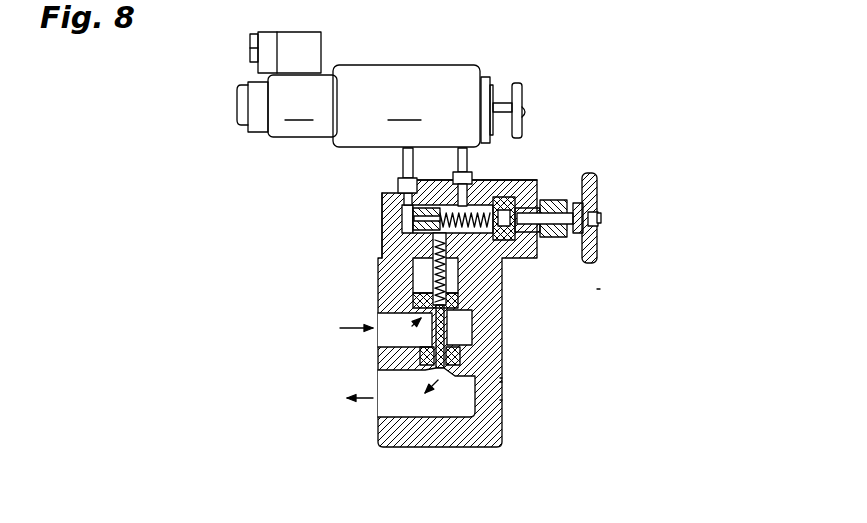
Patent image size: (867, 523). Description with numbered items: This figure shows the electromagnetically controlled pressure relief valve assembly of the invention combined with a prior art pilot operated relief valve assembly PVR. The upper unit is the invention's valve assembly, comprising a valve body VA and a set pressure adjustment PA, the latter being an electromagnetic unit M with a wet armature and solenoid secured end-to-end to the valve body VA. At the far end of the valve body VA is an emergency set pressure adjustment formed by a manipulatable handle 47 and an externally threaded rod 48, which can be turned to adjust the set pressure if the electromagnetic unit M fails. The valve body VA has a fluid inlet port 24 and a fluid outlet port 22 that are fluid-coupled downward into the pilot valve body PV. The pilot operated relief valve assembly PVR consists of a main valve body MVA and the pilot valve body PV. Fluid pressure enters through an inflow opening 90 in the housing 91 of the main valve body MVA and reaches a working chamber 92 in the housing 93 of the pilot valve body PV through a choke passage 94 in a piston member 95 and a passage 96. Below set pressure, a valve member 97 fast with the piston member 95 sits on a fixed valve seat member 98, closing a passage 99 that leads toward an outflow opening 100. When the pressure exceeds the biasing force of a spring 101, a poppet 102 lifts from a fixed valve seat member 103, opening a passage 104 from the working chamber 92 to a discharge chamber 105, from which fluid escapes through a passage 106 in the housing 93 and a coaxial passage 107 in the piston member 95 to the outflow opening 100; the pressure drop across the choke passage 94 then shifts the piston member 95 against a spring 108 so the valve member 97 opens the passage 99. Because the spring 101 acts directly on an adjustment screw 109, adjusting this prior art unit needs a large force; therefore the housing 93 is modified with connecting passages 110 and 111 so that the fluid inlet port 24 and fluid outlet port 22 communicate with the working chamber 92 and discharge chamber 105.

The electromagnetic unit M is at (309, 84).
The set pressure adjustment PA is at (287, 106).
The valve body VA is at (413, 106).
The pilot valve body PV is at (606, 186).
The pilot operated relief valve assembly PVR is at (597, 289).
The main valve body MVA is at (514, 378).
The fluid outlet port 22 is at (470, 156).
The fluid inlet port 24 is at (403, 162).
The manipulatable handle 47 is at (522, 92).
The externally threaded rod 48 is at (503, 103).
The inflow opening 90 is at (380, 343).
The housing 91 is at (500, 434).
The working chamber 92 is at (385, 232).
The housing 93 is at (530, 257).
The choke passage 94 is at (380, 318).
The piston member 95 is at (480, 302).
The passage 96 is at (385, 272).
The valve member 97 is at (500, 382).
The fixed valve seat member 98 is at (380, 365).
The passage 99 is at (500, 400).
The outflow opening 100 is at (380, 405).
The spring 101 is at (430, 169).
The poppet 102 is at (400, 212).
The fixed valve seat member 103 is at (383, 262).
The passage 104 is at (414, 214).
The discharge chamber 105 is at (600, 228).
The passage 106 is at (502, 284).
The passage 107 is at (470, 332).
The spring 108 is at (475, 299).
The adjustment screw 109 is at (600, 212).
The connecting passage 110 is at (535, 184).
The connecting passage 111 is at (382, 200).